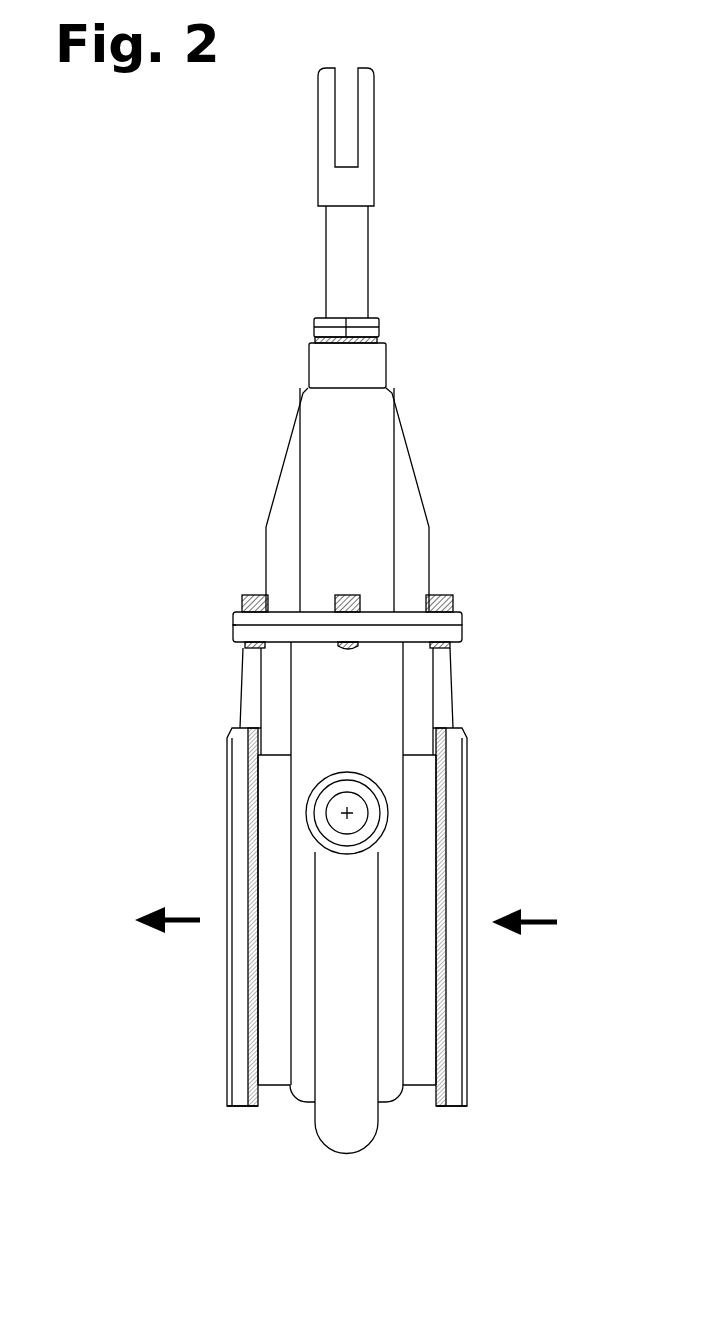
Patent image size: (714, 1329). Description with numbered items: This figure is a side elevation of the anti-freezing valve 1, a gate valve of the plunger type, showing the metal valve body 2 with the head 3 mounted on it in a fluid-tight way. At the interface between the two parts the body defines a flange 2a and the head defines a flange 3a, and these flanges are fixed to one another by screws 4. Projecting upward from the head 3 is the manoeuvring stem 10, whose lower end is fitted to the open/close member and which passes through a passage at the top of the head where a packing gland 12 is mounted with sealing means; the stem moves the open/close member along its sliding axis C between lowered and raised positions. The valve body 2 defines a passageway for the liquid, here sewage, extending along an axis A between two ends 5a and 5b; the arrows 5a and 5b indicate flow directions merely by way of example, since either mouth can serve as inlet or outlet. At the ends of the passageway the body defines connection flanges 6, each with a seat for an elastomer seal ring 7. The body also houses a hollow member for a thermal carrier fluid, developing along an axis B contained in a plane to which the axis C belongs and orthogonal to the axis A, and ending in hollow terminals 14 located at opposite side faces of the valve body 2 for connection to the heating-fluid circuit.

The anti-freezing valve 1 is at (150, 333).
The manoeuvring stem 10 is at (384, 237).
The packing gland 12 is at (378, 327).
The head 3 is at (424, 442).
The screws 4 is at (247, 597).
The flange of the head 3a is at (237, 618).
The flange of the valve body 2a is at (453, 633).
The seal ring 7 is at (225, 778).
The valve body 2 is at (295, 1128).
The axis of the hollow member B is at (346, 814).
The hollow terminals 14 is at (347, 862).
The axis of the open/close member C is at (347, 1017).
The axis of the passageway A is at (418, 918).
The connection flanges 6 is at (243, 1100).
The end of the passageway 5a is at (545, 919).
The end of the passageway 5b is at (149, 921).